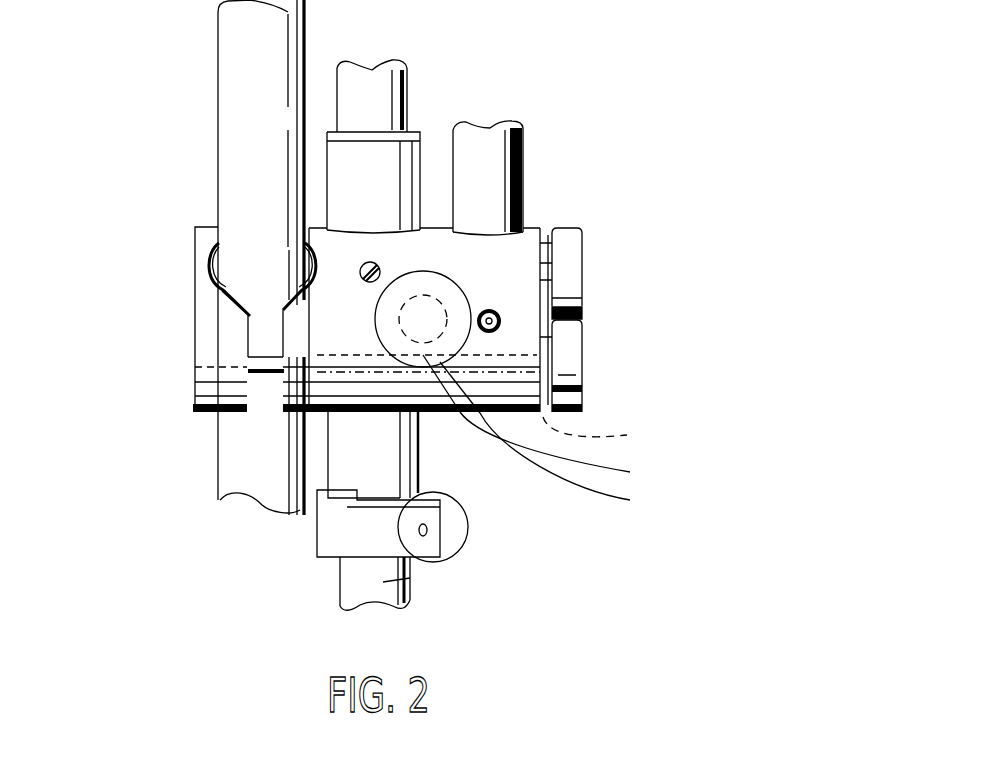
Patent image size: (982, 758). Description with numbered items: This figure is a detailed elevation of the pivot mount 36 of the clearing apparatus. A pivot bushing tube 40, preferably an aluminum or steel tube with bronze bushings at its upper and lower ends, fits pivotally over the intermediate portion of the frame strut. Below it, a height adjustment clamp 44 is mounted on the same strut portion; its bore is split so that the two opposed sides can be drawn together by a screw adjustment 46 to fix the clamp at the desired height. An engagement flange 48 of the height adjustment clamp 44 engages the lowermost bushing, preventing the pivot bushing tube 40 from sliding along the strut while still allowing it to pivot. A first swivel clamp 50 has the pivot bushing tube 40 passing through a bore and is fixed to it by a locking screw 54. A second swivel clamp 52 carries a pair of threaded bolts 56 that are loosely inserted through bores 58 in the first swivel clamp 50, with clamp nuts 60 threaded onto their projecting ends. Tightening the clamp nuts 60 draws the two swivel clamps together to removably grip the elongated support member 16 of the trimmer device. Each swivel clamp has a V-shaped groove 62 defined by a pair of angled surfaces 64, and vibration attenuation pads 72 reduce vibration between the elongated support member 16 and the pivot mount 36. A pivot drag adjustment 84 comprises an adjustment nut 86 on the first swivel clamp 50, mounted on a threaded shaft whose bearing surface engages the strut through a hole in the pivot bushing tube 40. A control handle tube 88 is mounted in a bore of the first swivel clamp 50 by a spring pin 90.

The elongated support member 16 is at (247, 42).
The pivot mount 36 is at (605, 93).
The pivot bushing tube 40 is at (357, 178).
The height adjustment clamp 44 is at (412, 572).
The screw adjustment 46 is at (445, 533).
The engagement flange 48 is at (340, 498).
The first swivel clamp 50 is at (498, 255).
The second swivel clamp 52 is at (192, 270).
The locking screw 54 is at (375, 265).
The threaded bolts 56 is at (223, 413).
The bores 58 is at (607, 435).
The clamp nuts 60 is at (567, 258).
The V-shaped groove 62 is at (206, 252).
The angled surfaces 64 is at (212, 298).
The vibration attenuation pads 72 is at (230, 307).
The pivot drag adjustment 84 is at (523, 378).
The adjustment nut 86 is at (535, 407).
The control handle tube 88 is at (487, 202).
The spring pin 90 is at (500, 317).